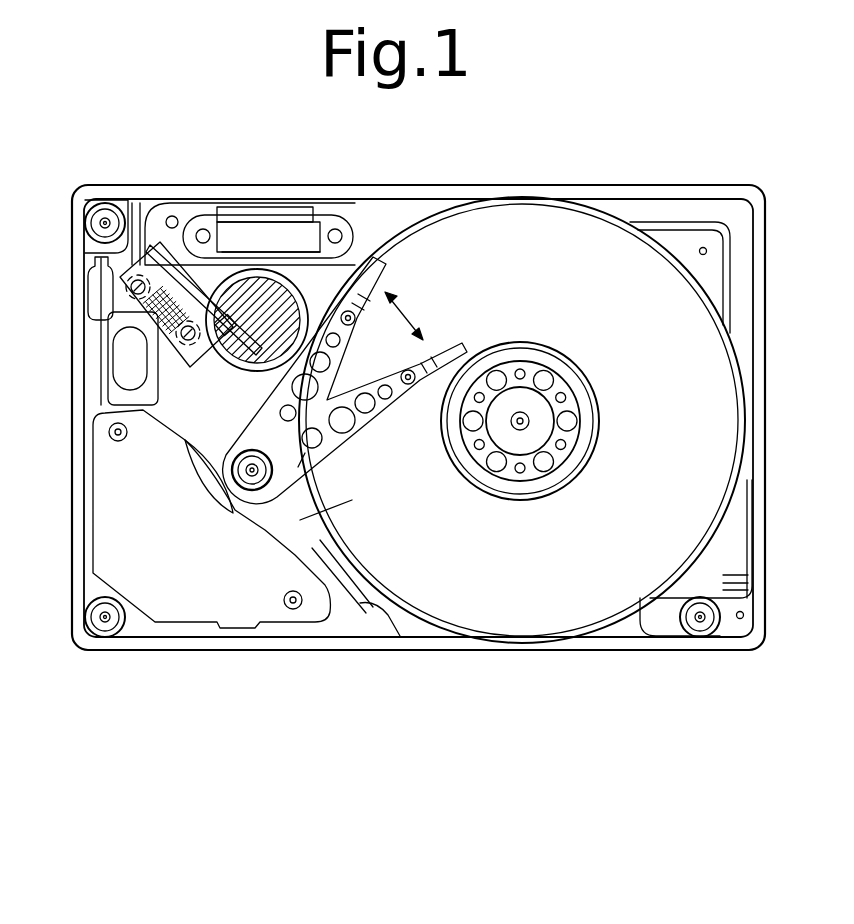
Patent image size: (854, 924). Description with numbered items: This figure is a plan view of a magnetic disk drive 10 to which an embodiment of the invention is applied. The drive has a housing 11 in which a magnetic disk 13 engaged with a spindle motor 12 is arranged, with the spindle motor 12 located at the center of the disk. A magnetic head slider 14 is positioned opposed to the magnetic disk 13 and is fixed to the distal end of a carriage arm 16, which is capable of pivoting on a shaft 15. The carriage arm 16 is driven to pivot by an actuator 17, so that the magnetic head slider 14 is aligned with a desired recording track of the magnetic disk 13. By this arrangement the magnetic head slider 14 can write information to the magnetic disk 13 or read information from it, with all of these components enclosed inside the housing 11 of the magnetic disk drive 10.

The magnetic disk drive 10 is at (400, 172).
The housing 11 is at (594, 185).
The spindle motor 12 is at (538, 437).
The magnetic disk 13 is at (653, 350).
The magnetic head slider 14 is at (452, 335).
The shaft 15 is at (238, 455).
The carriage arm 16 is at (358, 440).
The actuator 17 is at (183, 547).